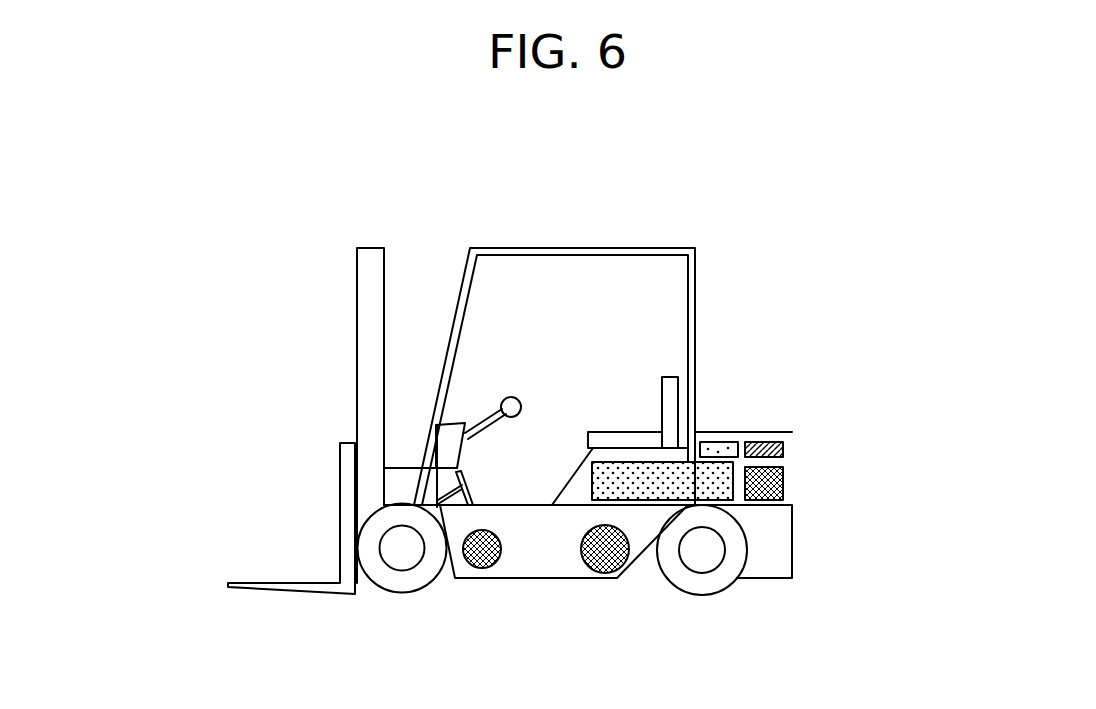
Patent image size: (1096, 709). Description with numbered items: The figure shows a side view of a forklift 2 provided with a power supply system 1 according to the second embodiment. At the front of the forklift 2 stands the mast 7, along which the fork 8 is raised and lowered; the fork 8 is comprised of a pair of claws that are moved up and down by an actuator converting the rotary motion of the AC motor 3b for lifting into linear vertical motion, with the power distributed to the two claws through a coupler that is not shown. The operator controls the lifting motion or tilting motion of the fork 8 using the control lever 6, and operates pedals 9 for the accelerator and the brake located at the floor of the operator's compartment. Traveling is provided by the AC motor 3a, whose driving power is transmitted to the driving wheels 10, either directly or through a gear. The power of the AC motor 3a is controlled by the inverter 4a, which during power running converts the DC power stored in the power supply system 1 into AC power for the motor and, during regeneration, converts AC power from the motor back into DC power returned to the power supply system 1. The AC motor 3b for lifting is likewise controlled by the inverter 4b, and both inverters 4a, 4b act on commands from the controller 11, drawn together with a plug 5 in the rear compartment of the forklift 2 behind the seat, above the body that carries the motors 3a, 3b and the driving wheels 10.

The power supply system 1 is at (575, 485).
The forklift 2 is at (568, 331).
The AC motor for traveling 3a is at (589, 597).
The AC motor for lifting 3b is at (460, 599).
The inverter 4a is at (840, 466).
The inverter 4b is at (840, 466).
The plug 5 is at (805, 422).
The control lever 6 is at (508, 417).
The mast 7 is at (325, 415).
The fork 8 is at (291, 518).
The pedals 9 is at (480, 470).
The driving wheels 10 is at (691, 587).
The controller 11 is at (737, 403).